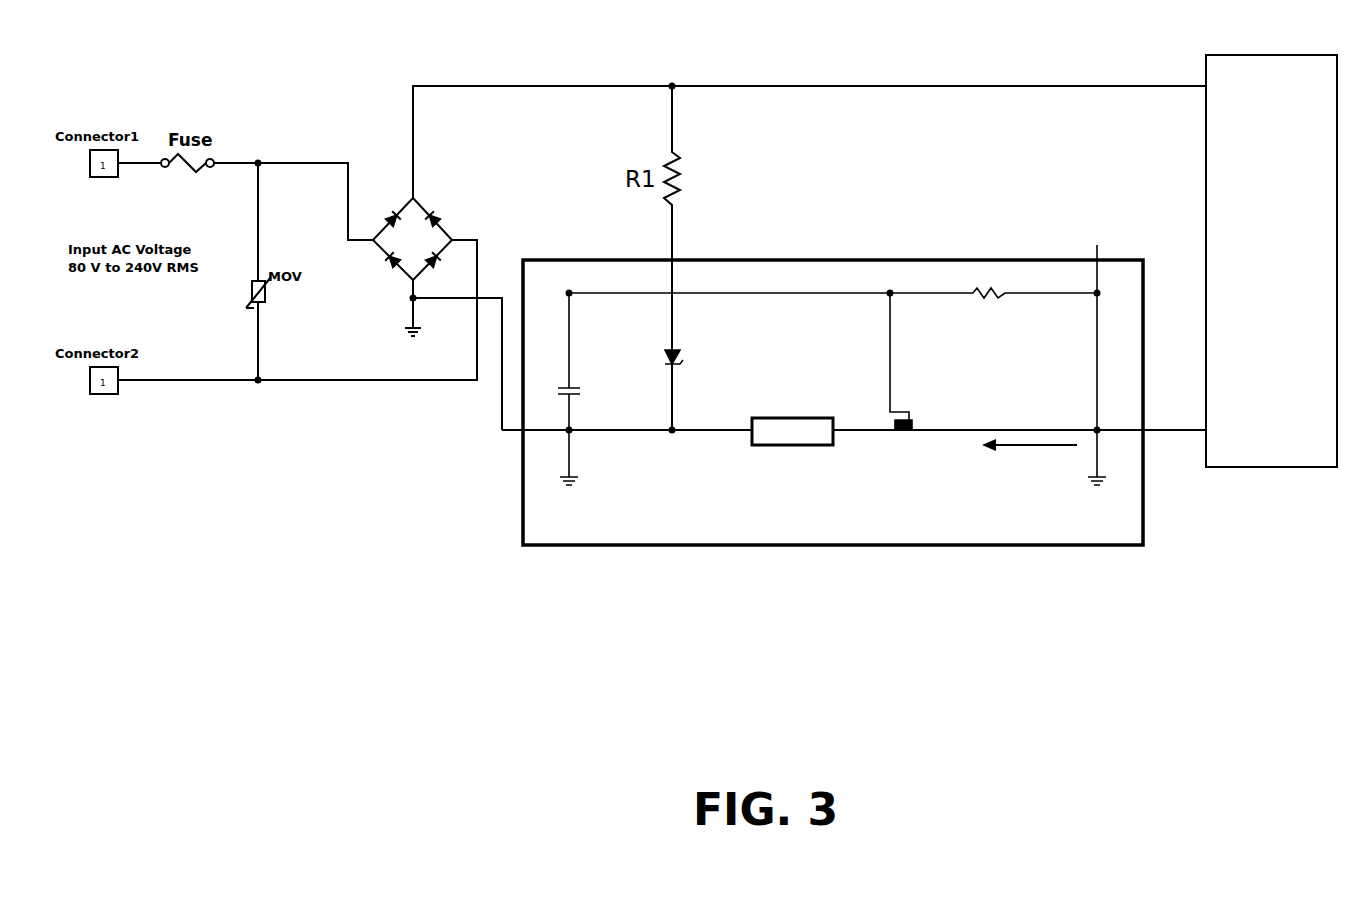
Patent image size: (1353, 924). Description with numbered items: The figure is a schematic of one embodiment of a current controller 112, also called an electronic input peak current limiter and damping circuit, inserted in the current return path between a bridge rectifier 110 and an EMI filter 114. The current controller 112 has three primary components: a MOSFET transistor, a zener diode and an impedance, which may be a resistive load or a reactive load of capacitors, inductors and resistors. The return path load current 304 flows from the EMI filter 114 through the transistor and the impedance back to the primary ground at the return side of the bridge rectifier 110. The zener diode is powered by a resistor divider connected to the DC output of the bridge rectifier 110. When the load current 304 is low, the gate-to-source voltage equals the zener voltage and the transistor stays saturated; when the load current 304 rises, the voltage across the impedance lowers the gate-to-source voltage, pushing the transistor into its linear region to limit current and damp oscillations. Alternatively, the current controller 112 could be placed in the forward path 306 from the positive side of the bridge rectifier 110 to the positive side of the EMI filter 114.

The bridge rectifier 110 is at (380, 136).
The current controller 112 is at (887, 258).
The EMI filter 114 is at (1260, 54).
The return path load current 304 is at (1029, 458).
The forward path 306 is at (858, 85).